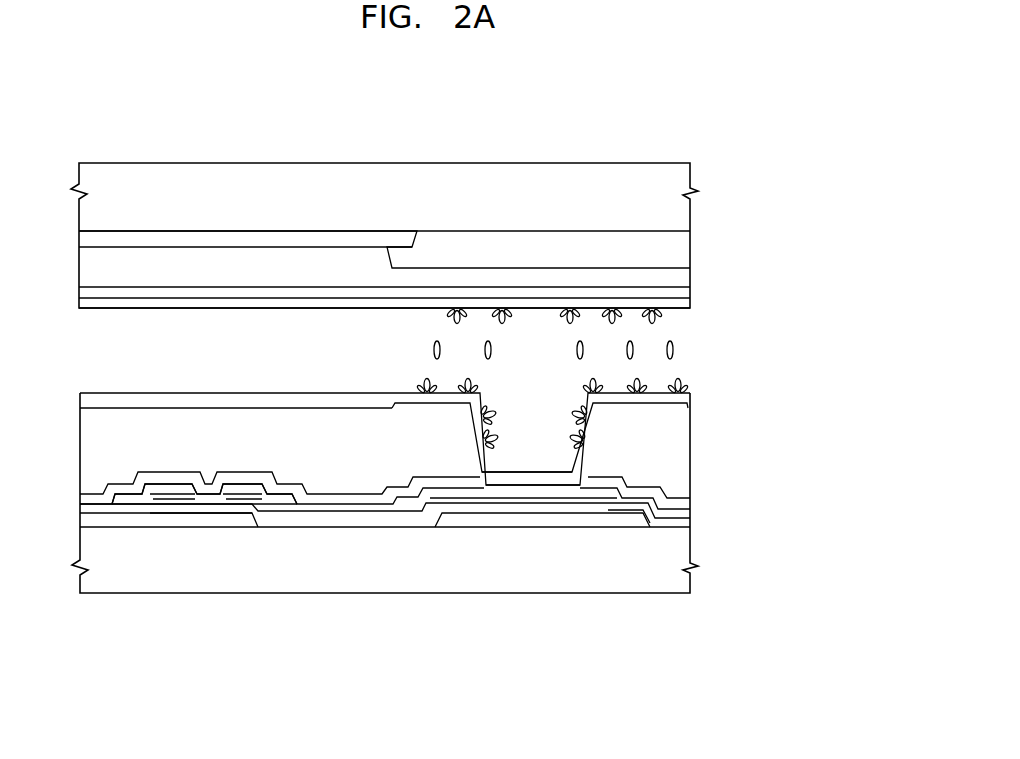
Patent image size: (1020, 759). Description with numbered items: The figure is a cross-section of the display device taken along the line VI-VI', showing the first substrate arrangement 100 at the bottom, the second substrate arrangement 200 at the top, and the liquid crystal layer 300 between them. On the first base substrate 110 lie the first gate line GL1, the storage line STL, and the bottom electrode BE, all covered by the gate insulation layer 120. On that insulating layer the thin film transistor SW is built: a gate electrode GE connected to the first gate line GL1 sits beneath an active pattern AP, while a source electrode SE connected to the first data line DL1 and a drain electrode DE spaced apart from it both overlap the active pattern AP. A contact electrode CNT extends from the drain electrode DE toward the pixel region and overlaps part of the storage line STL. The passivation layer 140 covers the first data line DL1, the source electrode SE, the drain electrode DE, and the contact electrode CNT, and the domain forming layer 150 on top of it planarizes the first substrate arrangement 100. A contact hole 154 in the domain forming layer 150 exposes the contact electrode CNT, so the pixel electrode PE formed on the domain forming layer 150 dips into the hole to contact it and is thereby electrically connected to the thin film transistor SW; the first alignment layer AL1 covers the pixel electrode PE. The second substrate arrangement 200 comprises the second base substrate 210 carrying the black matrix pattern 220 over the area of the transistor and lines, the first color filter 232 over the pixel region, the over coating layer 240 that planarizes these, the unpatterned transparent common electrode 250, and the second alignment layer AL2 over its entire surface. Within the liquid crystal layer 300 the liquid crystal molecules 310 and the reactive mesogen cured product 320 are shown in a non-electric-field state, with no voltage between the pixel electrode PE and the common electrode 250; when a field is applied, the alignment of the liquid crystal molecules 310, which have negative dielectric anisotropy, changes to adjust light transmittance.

The first substrate arrangement 100 is at (436, 548).
The first base substrate 110 is at (685, 548).
The gate insulation layer 120 is at (685, 518).
The passivation layer 140 is at (685, 497).
The domain forming layer 150 is at (680, 470).
The contact hole 154 is at (558, 462).
The second substrate arrangement 200 is at (445, 206).
The second base substrate 210 is at (678, 175).
The black matrix pattern 220 is at (287, 240).
The first color filter 232 is at (472, 252).
The over coating layer 240 is at (680, 277).
The common electrode 250 is at (680, 294).
The liquid crystal layer 300 is at (627, 349).
The liquid crystal molecules 310 is at (598, 353).
The reactive mesogen cured product 320 is at (658, 314).
The first alignment layer AL1 is at (683, 397).
The second alignment layer AL2 is at (421, 302).
The pixel electrode PE is at (683, 410).
The first gate line GL1 is at (98, 523).
The first data line DL1 is at (130, 498).
The source electrode SE is at (167, 488).
The gate electrode GE is at (200, 520).
The drain electrode DE is at (232, 490).
The active pattern AP is at (268, 510).
The thin film transistor SW is at (290, 678).
The contact electrode CNT is at (538, 492).
The storage line STL is at (600, 522).
The bottom electrode BE is at (662, 521).